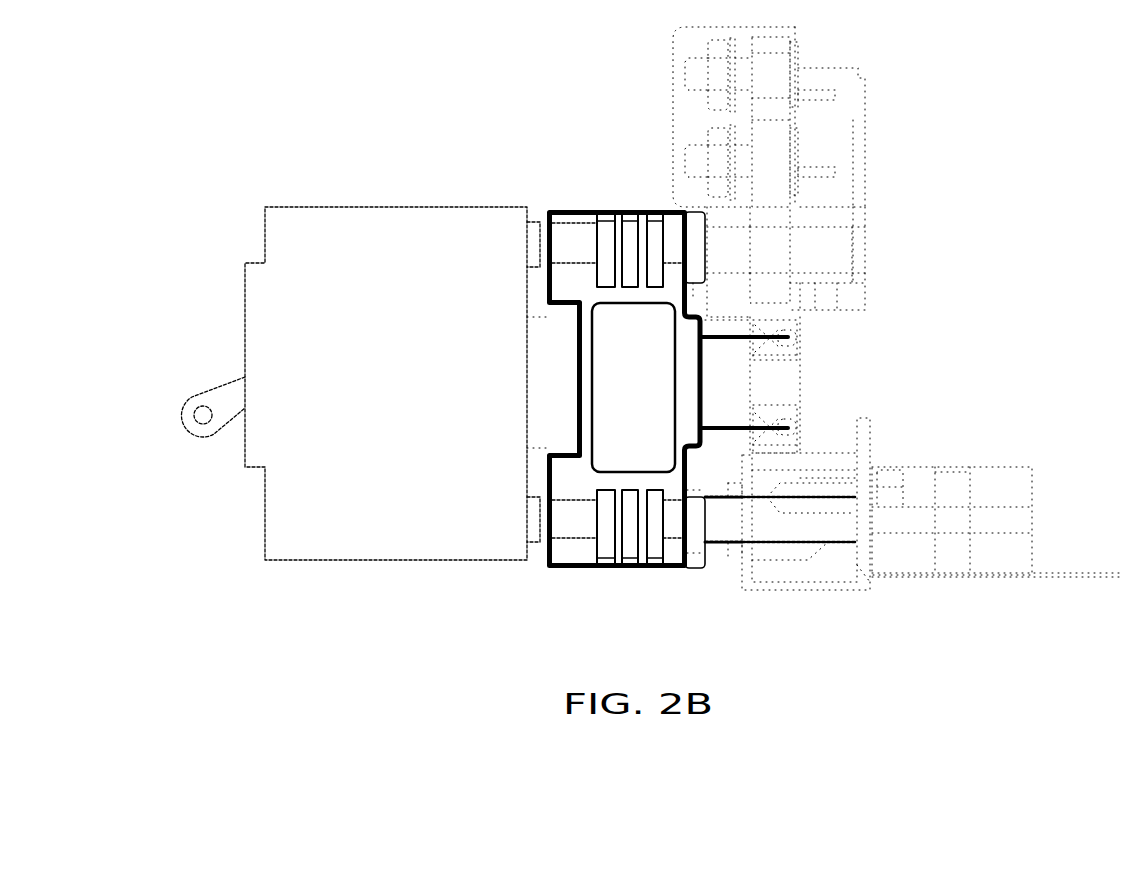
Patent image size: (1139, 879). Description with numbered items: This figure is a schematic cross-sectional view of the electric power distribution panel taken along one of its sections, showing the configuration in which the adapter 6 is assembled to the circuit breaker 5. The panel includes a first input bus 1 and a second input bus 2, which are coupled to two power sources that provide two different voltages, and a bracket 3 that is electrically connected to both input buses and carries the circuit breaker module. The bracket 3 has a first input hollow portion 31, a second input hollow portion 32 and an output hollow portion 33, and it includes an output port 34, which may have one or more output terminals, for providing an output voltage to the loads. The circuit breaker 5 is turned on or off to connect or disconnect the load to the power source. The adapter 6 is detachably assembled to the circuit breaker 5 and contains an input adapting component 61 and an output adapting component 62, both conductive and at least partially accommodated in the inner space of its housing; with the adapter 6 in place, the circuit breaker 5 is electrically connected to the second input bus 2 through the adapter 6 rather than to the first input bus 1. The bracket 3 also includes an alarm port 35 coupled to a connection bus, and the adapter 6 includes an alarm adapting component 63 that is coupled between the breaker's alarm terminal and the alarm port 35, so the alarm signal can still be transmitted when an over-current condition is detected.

The first input bus 1 is at (800, 602).
The second input bus 2 is at (952, 487).
The bracket 3 is at (856, 106).
The circuit breaker 5 is at (302, 516).
The adapter 6 is at (582, 570).
The first input hollow portion 31 is at (783, 549).
The second input hollow portion 32 is at (1013, 512).
The output hollow portion 33 is at (838, 218).
The output port 34 is at (698, 78).
The alarm port 35 is at (798, 405).
The input adapting component 61 is at (706, 569).
The output adapting component 62 is at (727, 240).
The alarm adapting component 63 is at (800, 327).